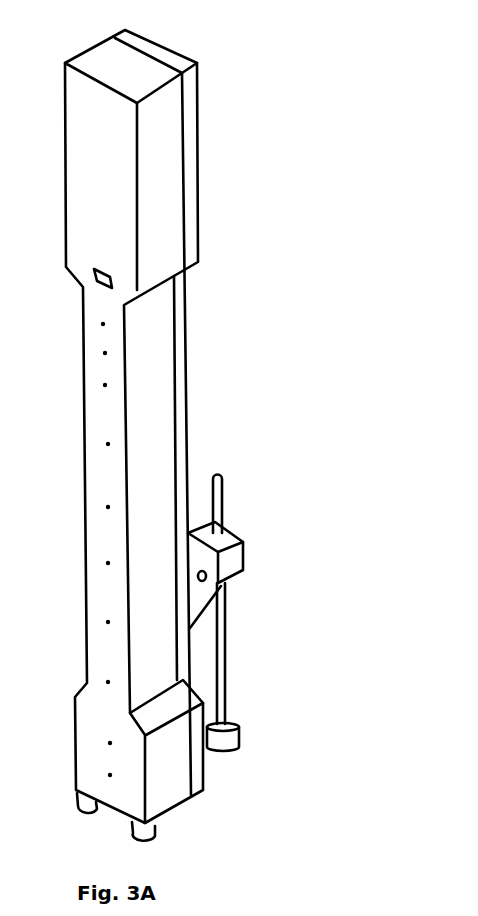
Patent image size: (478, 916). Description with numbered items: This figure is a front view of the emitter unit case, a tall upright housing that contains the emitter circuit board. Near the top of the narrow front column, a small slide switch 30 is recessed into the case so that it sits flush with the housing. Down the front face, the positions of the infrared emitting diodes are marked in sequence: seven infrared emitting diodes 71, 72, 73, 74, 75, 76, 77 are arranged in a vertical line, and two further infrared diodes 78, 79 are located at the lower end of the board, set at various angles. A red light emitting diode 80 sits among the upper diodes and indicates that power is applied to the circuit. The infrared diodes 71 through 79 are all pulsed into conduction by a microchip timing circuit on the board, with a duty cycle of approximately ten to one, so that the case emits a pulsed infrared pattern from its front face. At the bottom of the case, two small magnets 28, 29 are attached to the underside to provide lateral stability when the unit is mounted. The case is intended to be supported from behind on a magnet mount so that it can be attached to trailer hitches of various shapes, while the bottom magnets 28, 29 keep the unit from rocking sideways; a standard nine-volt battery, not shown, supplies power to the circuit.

The small magnet 28 is at (78, 807).
The small magnet 29 is at (153, 832).
The slide switch 30 is at (112, 282).
The infrared emitting diode 71 is at (103, 324).
The infrared emitting diode 72 is at (105, 385).
The infrared emitting diode 73 is at (108, 444).
The infrared emitting diode 74 is at (108, 507).
The infrared emitting diode 75 is at (108, 563).
The infrared emitting diode 76 is at (108, 622).
The infrared emitting diode 77 is at (108, 682).
The infrared diode 78 is at (110, 743).
The infrared diode 79 is at (110, 775).
The red light emitting diode 80 is at (105, 353).